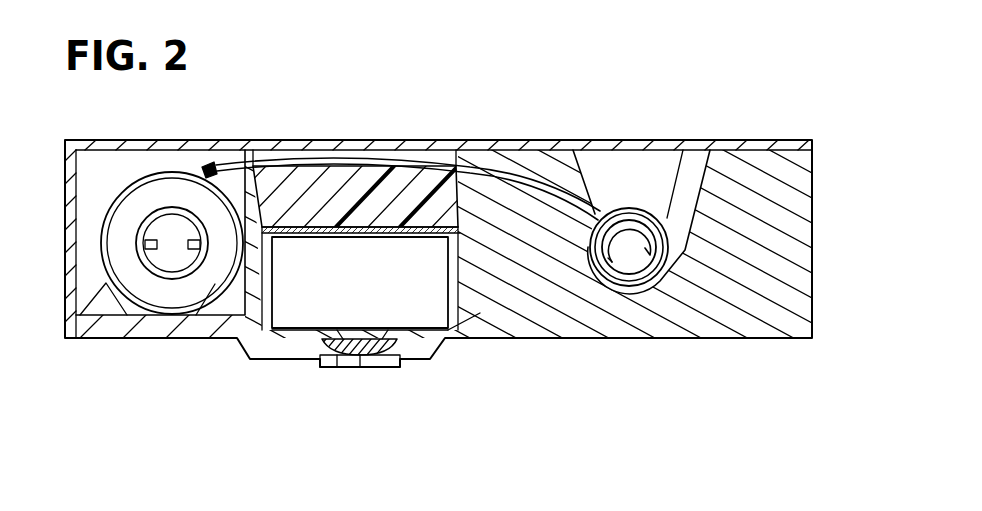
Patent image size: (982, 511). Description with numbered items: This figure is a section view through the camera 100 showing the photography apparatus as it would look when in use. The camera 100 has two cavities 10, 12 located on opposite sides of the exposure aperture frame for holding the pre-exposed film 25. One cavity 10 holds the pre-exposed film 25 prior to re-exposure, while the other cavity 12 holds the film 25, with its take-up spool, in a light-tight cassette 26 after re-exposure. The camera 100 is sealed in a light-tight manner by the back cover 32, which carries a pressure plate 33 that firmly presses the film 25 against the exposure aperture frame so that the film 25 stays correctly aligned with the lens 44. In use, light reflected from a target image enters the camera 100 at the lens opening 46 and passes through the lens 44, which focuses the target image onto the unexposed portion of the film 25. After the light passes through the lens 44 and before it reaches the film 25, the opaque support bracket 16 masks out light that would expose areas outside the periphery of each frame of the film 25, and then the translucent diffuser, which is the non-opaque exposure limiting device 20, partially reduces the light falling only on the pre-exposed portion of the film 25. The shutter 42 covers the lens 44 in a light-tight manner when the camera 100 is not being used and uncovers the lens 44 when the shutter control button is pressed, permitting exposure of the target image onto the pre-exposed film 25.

The camera 100 is at (812, 140).
The cavity 10 is at (610, 175).
The cavity 12 is at (82, 303).
The opaque support bracket 16 is at (439, 233).
The exposure limiting device 20 is at (358, 180).
The pre-exposed film 25 is at (638, 203).
The light-tight cassette 26 is at (99, 231).
The back cover 32 is at (78, 140).
The pressure plate 33 is at (524, 165).
The shutter 42 is at (337, 370).
The lens 44 is at (356, 368).
The lens opening 46 is at (375, 368).